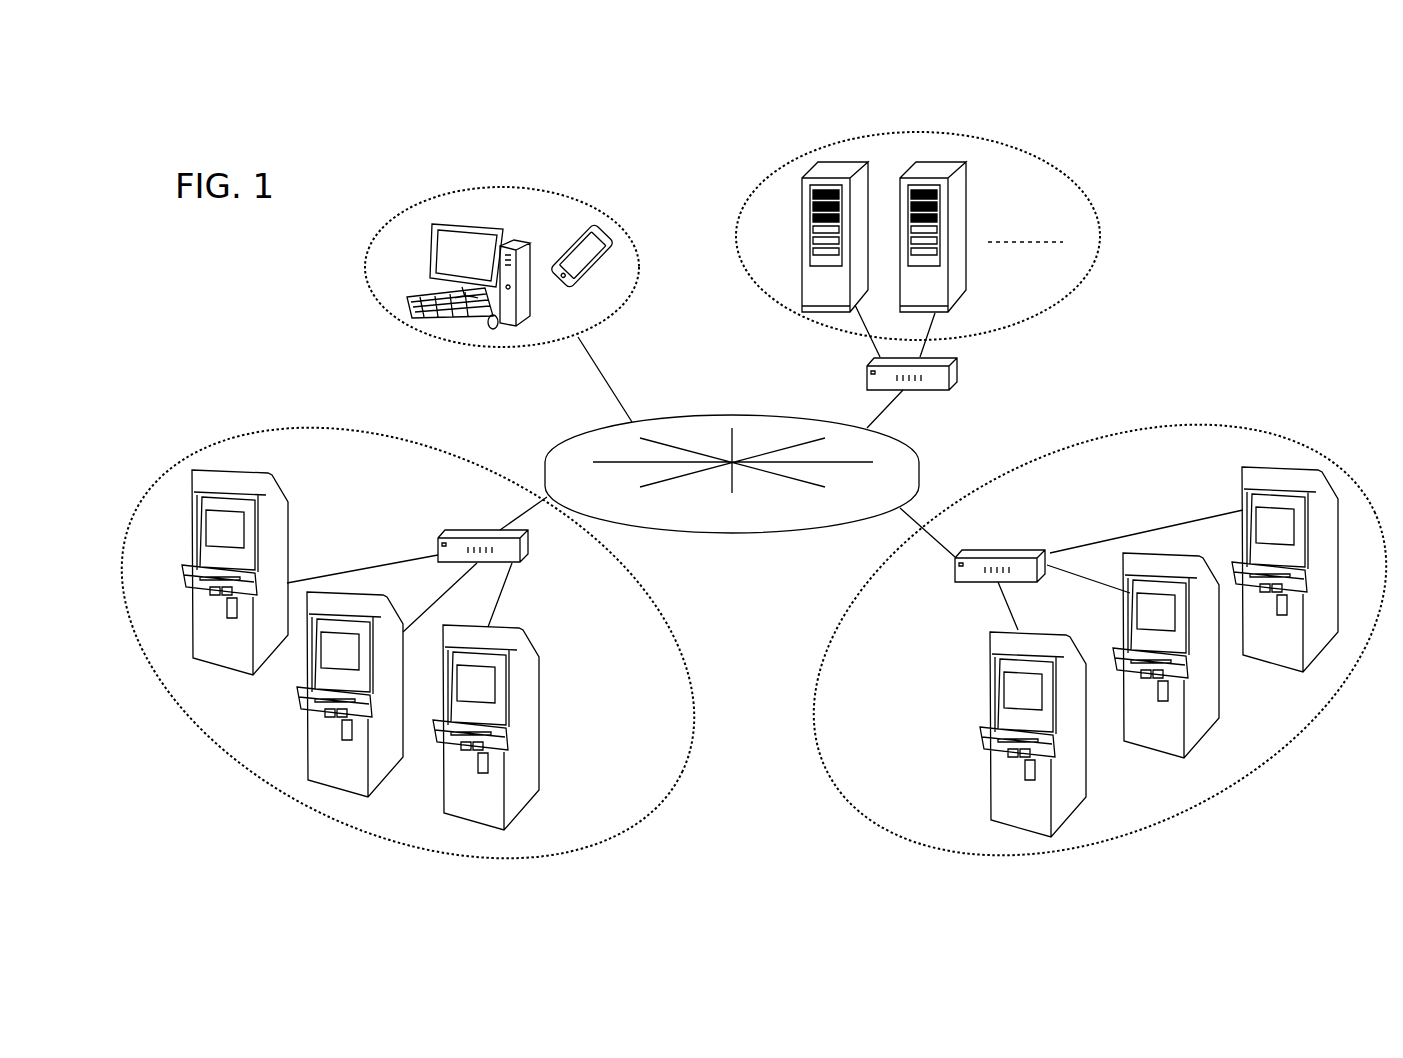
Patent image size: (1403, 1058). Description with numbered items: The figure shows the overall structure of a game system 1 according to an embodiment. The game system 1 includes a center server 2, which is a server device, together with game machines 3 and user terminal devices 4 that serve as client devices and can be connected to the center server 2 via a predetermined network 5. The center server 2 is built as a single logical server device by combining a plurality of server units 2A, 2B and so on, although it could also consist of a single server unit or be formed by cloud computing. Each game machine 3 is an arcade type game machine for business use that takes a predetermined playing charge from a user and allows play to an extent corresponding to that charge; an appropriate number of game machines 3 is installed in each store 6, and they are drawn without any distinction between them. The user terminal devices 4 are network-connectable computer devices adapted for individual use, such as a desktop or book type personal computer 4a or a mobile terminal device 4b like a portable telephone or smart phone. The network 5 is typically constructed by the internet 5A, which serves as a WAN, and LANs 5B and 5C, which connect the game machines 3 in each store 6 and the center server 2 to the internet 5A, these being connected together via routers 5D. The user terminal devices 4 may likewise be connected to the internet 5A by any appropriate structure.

The game system 1 is at (1197, 281).
The center server 2 is at (1093, 194).
The server unit 2A is at (822, 170).
The server unit 2B is at (912, 163).
The game machine 3 is at (453, 780).
The user terminal device 4 is at (615, 212).
The personal computer 4a is at (467, 228).
The mobile terminal device 4b is at (600, 256).
The network 5 is at (572, 424).
The internet 5A is at (677, 418).
The LAN 5B is at (579, 589).
The LAN 5C is at (947, 331).
The router 5D is at (867, 373).
The store 6 is at (350, 433).